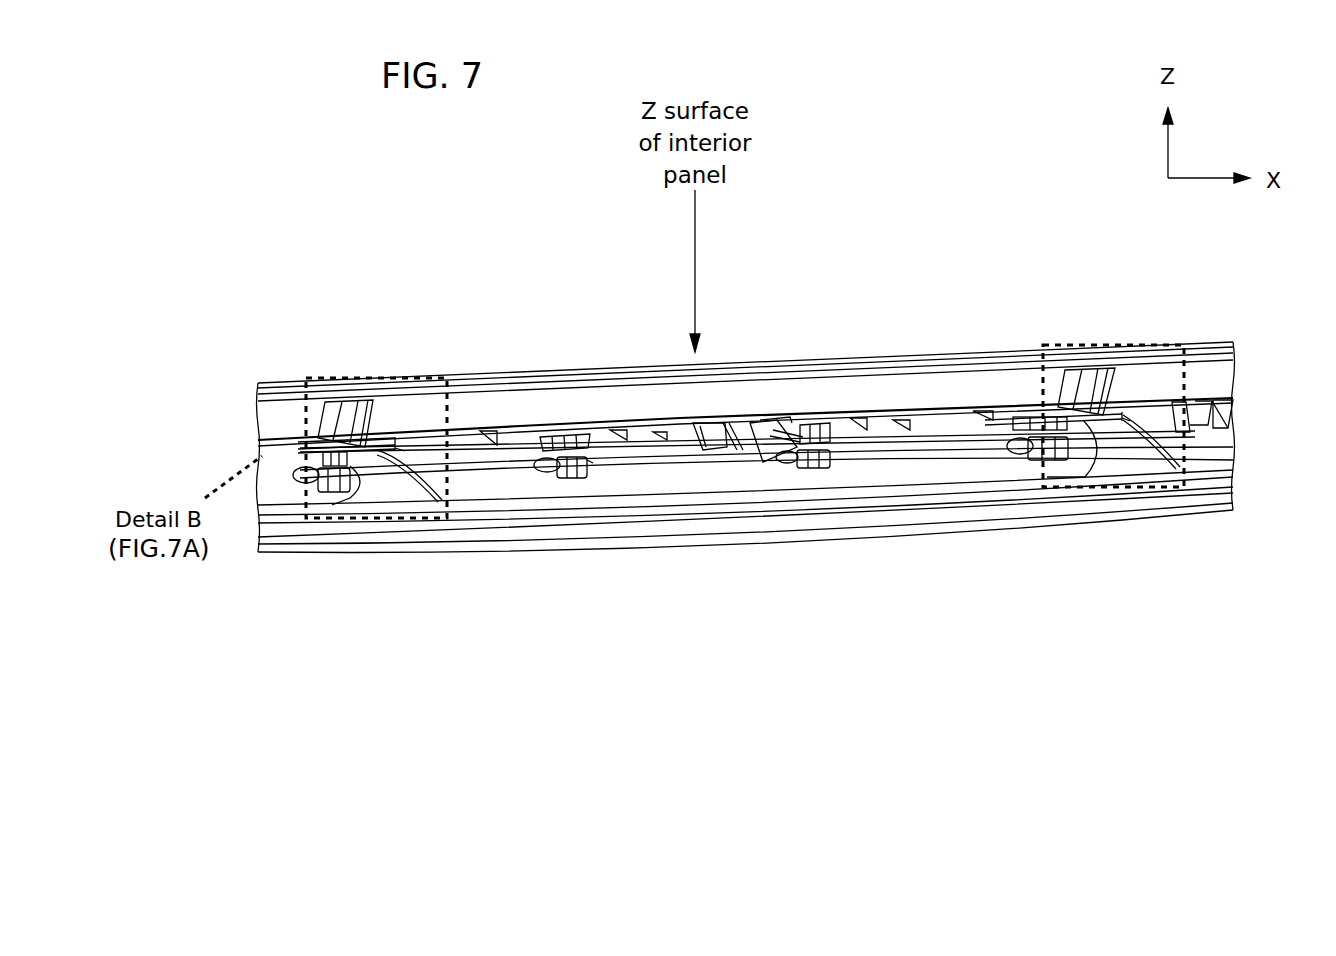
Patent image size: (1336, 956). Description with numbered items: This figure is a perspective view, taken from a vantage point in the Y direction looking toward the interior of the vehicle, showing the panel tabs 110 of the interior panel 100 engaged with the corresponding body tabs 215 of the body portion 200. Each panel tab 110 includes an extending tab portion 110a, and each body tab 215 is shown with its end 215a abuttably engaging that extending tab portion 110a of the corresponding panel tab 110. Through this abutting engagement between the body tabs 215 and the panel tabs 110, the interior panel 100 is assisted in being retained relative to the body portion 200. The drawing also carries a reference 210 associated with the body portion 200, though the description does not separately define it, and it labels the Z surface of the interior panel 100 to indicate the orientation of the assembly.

The interior panel 100 is at (322, 286).
The panel tab 110 is at (358, 448).
The extending tab portion 110a is at (355, 450).
The body portion 200 is at (388, 606).
The interior panel 210 is at (692, 522).
The body tab 215 is at (398, 487).
The end 215a is at (350, 468).